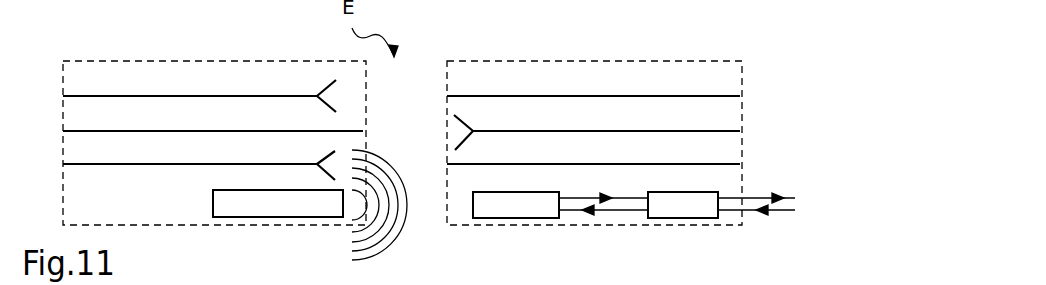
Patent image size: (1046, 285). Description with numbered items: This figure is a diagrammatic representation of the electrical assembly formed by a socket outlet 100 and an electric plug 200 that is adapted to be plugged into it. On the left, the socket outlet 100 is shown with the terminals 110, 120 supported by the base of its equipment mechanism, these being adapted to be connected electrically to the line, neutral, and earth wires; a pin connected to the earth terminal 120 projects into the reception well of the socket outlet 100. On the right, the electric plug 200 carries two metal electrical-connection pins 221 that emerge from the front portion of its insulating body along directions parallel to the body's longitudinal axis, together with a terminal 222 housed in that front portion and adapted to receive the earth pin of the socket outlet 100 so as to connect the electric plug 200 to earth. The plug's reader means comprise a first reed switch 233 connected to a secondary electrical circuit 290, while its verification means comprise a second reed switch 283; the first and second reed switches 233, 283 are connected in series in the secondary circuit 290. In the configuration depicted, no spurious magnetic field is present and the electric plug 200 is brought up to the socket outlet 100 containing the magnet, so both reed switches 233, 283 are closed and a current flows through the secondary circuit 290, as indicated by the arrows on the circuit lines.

The socket outlet 100 is at (187, 40).
The terminals 110 is at (282, 95).
The earth terminal 120 is at (90, 133).
The electric plug 200 is at (643, 26).
The electrical-connection pins 221 is at (527, 95).
The terminal 222 is at (589, 130).
The first reed switch 233 is at (544, 210).
The second reed switch 283 is at (693, 210).
The secondary electrical circuit 290 is at (782, 212).